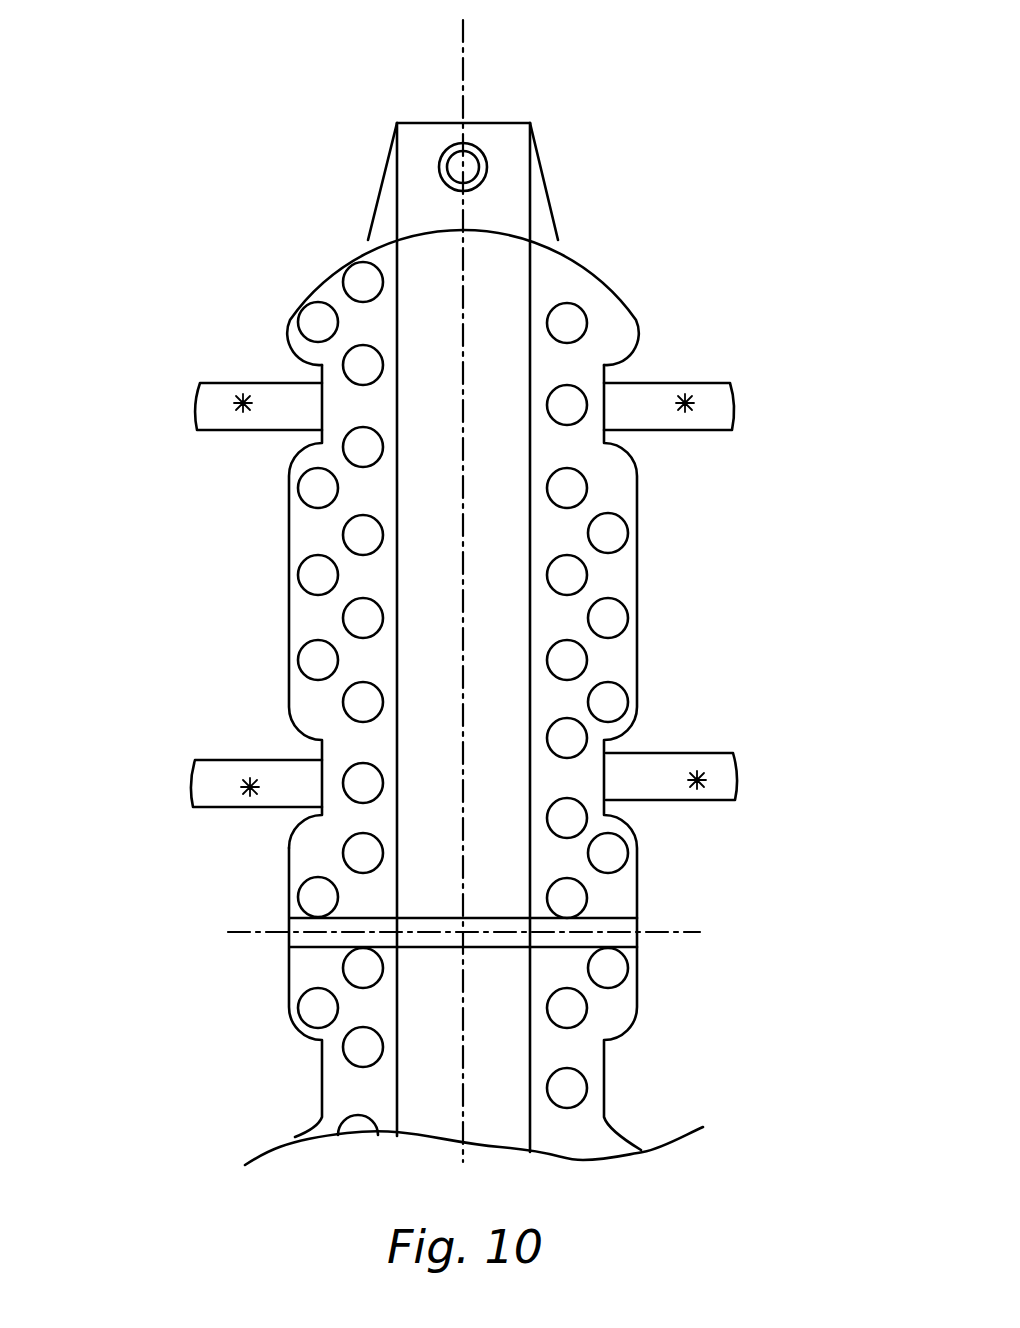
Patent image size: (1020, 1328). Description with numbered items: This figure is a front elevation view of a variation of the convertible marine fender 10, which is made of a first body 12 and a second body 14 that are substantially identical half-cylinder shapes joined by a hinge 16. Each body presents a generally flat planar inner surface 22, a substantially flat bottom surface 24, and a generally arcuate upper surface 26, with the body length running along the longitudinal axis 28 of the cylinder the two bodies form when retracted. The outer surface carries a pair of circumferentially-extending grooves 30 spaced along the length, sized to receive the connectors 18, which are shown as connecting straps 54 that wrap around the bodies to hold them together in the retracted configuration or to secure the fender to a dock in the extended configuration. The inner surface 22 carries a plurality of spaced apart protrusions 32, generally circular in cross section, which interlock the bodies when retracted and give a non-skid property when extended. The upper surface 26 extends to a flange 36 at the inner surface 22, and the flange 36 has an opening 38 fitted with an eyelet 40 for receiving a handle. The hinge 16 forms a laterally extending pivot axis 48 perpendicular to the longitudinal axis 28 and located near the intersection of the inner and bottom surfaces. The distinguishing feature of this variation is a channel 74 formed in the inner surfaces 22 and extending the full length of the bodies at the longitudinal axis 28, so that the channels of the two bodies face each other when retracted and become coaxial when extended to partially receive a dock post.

The convertible marine fender 10 is at (148, 598).
The first body 12 is at (290, 995).
The second body 14 is at (290, 521).
The hinge 16 is at (641, 923).
The connectors 18 is at (682, 384).
The inner surface 22 is at (577, 268).
The bottom surface 24 is at (594, 947).
The upper surface 26 is at (313, 279).
The longitudinal axis 28 is at (463, 33).
The grooves 30 is at (310, 363).
The protrusions 32 is at (586, 321).
The flange 36 is at (377, 180).
The opening 38 is at (486, 182).
The eyelet 40 is at (481, 150).
The pivot axis 48 is at (672, 932).
The connecting straps 54 is at (690, 433).
The channel 74 is at (400, 473).